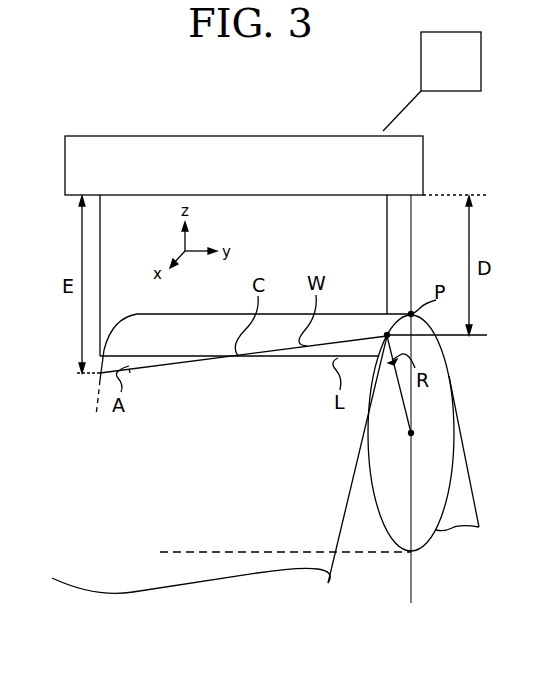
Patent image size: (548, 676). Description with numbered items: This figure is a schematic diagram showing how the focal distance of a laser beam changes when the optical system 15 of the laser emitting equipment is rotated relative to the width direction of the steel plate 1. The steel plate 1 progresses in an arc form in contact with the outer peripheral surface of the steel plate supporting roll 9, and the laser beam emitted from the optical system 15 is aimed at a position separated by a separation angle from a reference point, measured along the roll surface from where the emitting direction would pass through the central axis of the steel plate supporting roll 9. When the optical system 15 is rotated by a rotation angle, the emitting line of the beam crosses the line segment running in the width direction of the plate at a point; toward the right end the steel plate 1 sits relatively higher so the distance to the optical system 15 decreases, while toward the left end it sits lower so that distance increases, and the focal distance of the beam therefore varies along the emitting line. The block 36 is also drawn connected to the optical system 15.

The steel plate 1 is at (331, 567).
The steel plate supporting roll 9 is at (419, 535).
The optical system 15 is at (262, 134).
The controller 36 is at (432, 81).